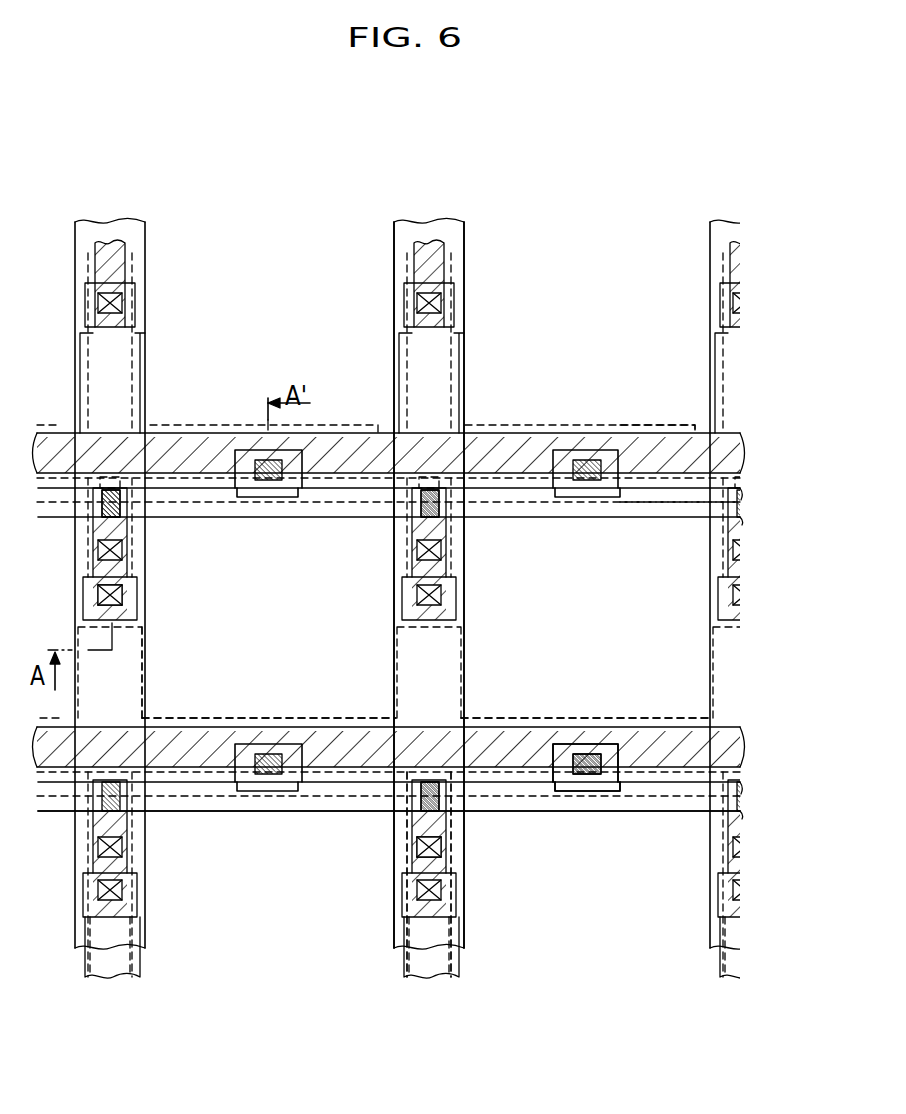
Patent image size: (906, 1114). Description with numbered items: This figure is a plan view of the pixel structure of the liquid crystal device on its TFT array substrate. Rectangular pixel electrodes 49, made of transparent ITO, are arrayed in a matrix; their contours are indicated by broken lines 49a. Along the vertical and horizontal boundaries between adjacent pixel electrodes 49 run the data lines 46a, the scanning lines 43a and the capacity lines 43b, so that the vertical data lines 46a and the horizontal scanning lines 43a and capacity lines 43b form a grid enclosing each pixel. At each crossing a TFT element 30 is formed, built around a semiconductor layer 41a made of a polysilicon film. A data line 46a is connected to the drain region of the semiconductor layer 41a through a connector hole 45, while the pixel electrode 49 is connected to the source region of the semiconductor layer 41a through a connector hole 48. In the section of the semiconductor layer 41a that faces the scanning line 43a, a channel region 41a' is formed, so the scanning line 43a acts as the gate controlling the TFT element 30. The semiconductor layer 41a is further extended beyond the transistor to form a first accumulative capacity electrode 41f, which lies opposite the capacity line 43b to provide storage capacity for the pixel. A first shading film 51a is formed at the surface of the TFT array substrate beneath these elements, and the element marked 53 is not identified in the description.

The TFT element 30 is at (407, 598).
The semiconductor layer 41a is at (379, 874).
The channel region 41a' is at (482, 822).
The first accumulative capacity electrode 41f is at (145, 650).
The scanning line 43a is at (285, 808).
The capacity line 43b is at (258, 718).
The connector hole 45 is at (437, 848).
The data line 46a is at (466, 595).
The connector hole 48 is at (590, 777).
The pixel electrode 49 is at (293, 606).
The broken line contour of pixel electrode 49a is at (675, 504).
The first shading film 51a is at (115, 717).
The pixel contact hole 53 is at (122, 593).